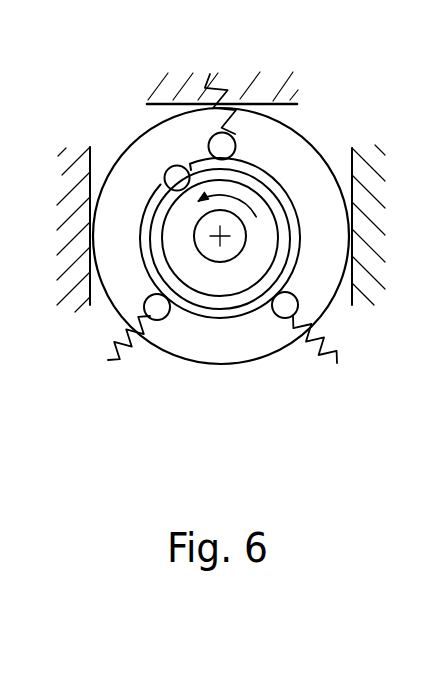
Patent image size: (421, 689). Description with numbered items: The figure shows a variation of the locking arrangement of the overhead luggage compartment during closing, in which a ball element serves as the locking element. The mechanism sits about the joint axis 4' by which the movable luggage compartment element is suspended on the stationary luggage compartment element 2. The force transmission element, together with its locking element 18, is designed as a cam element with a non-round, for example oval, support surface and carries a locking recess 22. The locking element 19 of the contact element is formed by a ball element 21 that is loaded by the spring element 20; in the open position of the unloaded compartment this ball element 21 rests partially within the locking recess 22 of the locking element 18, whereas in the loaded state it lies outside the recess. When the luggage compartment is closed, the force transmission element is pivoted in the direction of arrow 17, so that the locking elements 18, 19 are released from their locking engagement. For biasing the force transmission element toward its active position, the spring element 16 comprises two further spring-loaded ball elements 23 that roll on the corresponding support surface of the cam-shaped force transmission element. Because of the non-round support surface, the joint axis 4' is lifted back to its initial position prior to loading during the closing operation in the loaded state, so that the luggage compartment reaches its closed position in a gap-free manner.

The stationary luggage compartment element 2 is at (305, 92).
The joint axis 4' is at (122, 222).
The spring element 16 is at (112, 354).
The arrow 17 is at (232, 194).
The locking element 18 is at (160, 161).
The locking element 19 is at (248, 120).
The spring element 20 is at (224, 146).
The ball element 21 is at (219, 193).
The locking recess 22 is at (165, 182).
The spring-loaded ball elements 23 is at (157, 307).